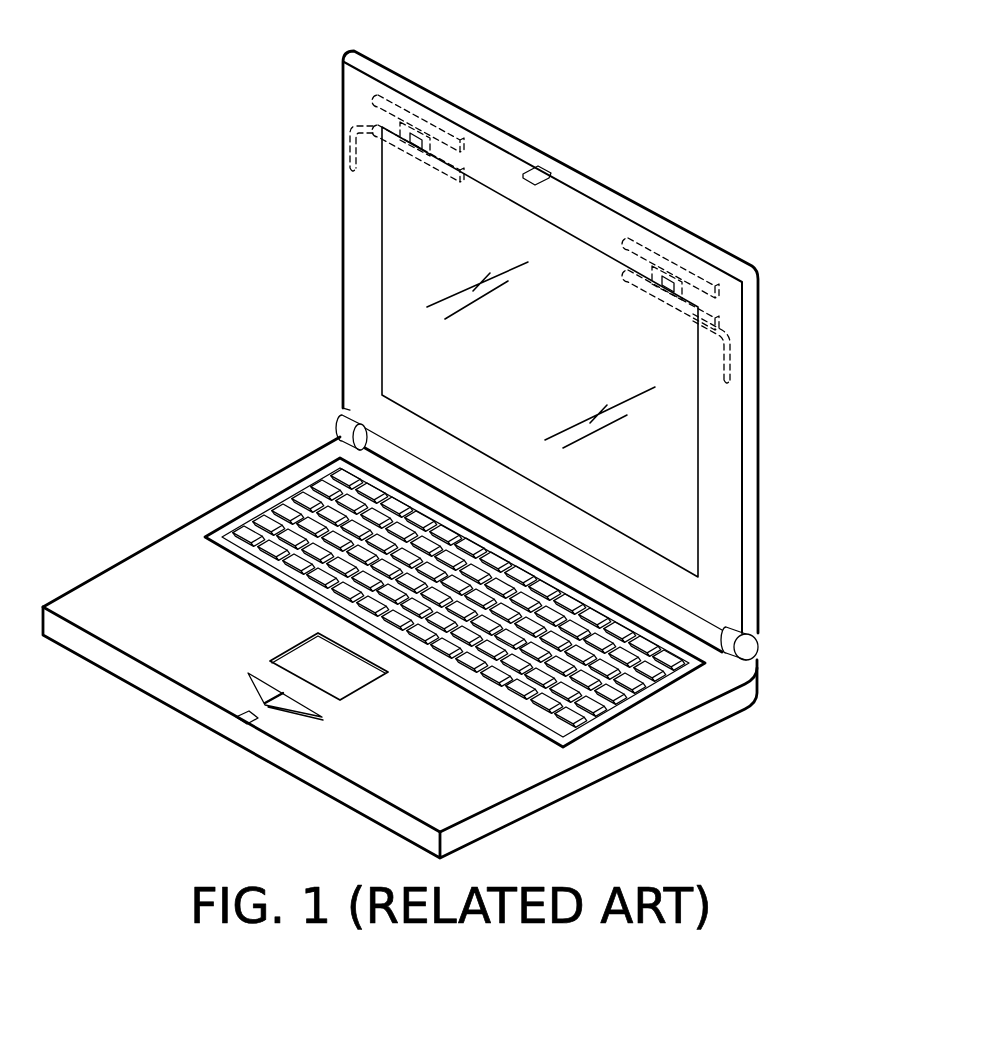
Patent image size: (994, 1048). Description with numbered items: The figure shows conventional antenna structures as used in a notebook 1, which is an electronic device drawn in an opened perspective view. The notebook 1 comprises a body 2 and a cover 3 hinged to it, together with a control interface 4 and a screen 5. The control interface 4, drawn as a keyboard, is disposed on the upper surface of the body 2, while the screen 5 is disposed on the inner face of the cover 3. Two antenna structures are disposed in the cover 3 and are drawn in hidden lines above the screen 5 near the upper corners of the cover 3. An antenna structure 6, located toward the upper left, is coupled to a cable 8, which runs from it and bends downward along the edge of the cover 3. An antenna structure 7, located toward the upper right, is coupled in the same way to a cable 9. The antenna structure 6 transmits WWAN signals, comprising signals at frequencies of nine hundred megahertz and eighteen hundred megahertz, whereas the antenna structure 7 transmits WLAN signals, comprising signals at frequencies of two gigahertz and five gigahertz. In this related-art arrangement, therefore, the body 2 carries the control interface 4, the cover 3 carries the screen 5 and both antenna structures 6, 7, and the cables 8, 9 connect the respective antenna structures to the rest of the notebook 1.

The notebook 1 is at (135, 49).
The body 2 is at (605, 757).
The cover 3 is at (748, 512).
The control interface 4 is at (248, 520).
The screen 5 is at (400, 303).
The antenna structure 6 is at (413, 128).
The antenna structure 7 is at (666, 278).
The cable 8 is at (352, 152).
The cable 9 is at (732, 362).